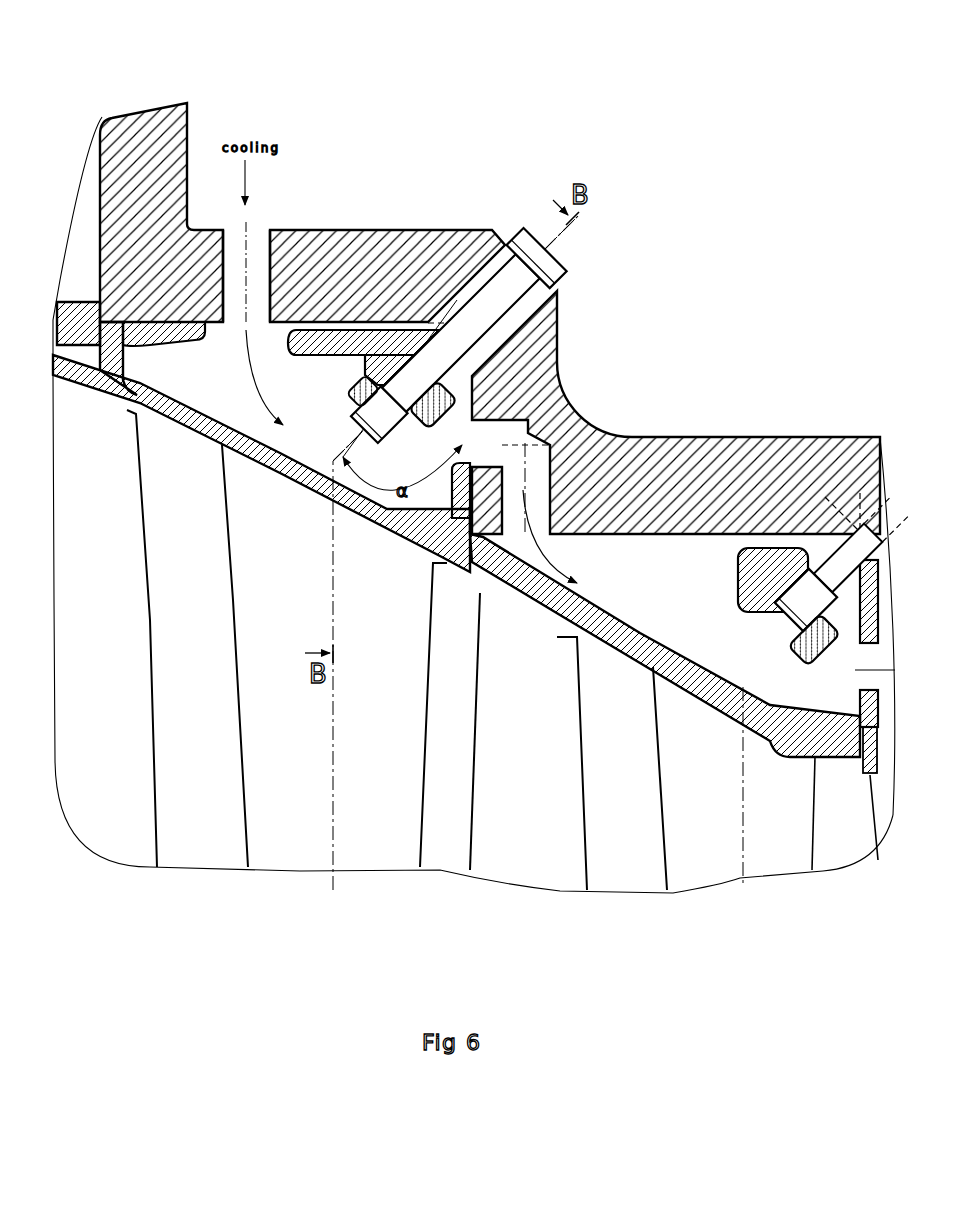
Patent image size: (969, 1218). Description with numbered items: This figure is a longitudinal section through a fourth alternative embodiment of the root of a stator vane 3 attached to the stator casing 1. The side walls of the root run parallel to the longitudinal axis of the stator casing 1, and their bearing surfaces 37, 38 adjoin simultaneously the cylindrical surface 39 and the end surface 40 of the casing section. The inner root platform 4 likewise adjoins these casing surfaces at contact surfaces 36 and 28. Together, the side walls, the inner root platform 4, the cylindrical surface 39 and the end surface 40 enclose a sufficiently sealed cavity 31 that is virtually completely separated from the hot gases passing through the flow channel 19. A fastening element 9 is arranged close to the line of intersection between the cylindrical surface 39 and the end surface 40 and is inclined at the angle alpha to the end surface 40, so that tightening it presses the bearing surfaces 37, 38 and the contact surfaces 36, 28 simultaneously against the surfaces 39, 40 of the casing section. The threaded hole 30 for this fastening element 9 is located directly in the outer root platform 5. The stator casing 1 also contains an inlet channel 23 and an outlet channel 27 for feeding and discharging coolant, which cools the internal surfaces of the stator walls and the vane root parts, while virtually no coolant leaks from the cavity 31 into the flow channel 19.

The stator casing 1 is at (115, 150).
The contact surface 36 is at (112, 318).
The bearing surface 37 is at (167, 315).
The inlet channel 23 is at (262, 273).
The cavity 31 is at (260, 367).
The inner root platform 4 is at (368, 390).
The outer root platform 5 is at (357, 397).
The outlet channel 27 is at (474, 517).
The fastening element 9 is at (474, 488).
The threaded hole 30 is at (530, 478).
The bearing surface 38 is at (545, 462).
The contact surface 28 is at (575, 415).
The cylindrical surface 39 is at (231, 330).
The end surface 40 is at (465, 397).
The vane 3 is at (380, 737).
The flow channel 19 is at (632, 783).